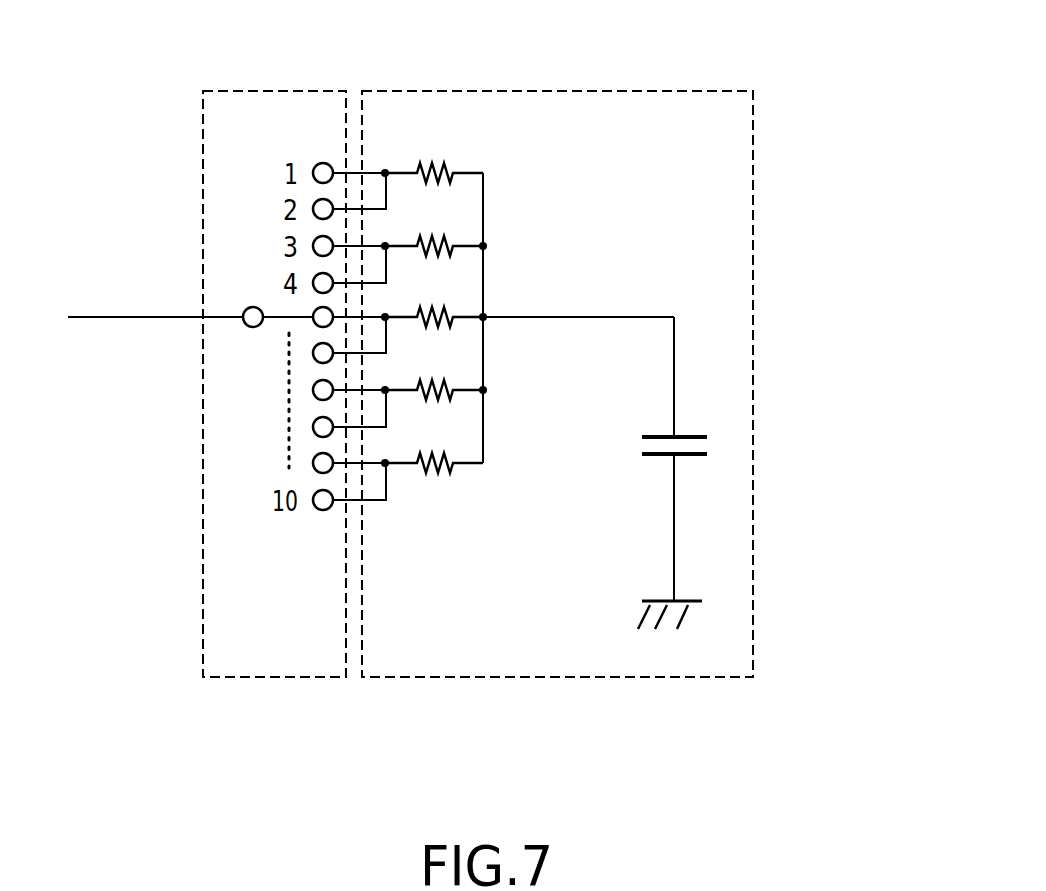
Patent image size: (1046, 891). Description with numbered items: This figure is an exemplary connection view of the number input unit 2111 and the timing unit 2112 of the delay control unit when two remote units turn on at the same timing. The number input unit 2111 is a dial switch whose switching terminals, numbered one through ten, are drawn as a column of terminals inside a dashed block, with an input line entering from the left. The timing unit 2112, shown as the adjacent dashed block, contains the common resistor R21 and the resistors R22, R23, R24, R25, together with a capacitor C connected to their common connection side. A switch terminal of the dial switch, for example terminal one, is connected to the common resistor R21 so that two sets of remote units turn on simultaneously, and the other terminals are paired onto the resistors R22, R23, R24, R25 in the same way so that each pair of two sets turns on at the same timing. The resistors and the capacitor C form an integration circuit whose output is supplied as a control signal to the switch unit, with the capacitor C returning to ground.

The number input unit 2111 is at (272, 679).
The timing unit 2112 is at (618, 90).
The common resistor R21 is at (447, 167).
The resistor R22 is at (447, 240).
The resistor R23 is at (447, 312).
The resistor R24 is at (447, 385).
The resistor R25 is at (447, 458).
The capacitor C is at (688, 433).